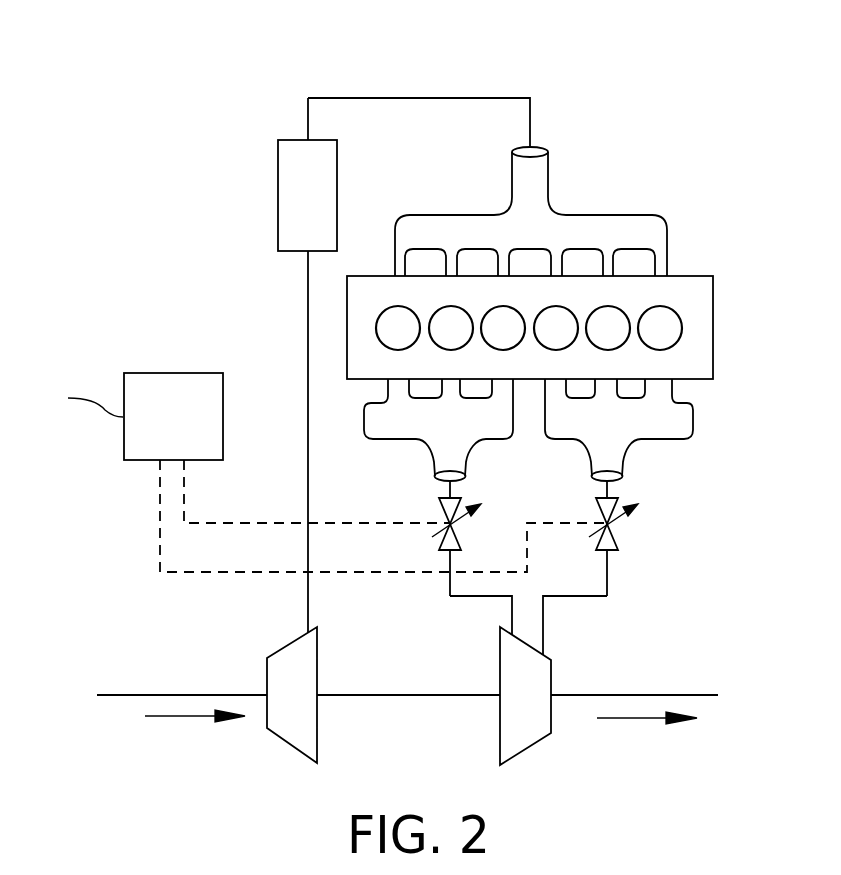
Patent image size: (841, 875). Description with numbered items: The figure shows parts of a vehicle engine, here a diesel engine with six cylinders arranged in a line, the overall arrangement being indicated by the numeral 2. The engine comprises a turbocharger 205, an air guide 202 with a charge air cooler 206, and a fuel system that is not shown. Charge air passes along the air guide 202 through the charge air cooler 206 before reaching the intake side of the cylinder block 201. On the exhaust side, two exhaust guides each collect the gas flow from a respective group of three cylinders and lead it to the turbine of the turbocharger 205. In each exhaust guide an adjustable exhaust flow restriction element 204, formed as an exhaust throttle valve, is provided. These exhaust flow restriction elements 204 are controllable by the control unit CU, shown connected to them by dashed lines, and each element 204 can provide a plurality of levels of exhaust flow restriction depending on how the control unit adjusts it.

The internal combustion engine arrangement 2 is at (162, 80).
The internal combustion engine / cylinders 201 is at (677, 315).
The air guide 202 is at (422, 98).
The adjustable exhaust flow restriction element 204 is at (431, 540).
The turbocharger 205 is at (276, 767).
The charge air cooler 206 is at (278, 195).